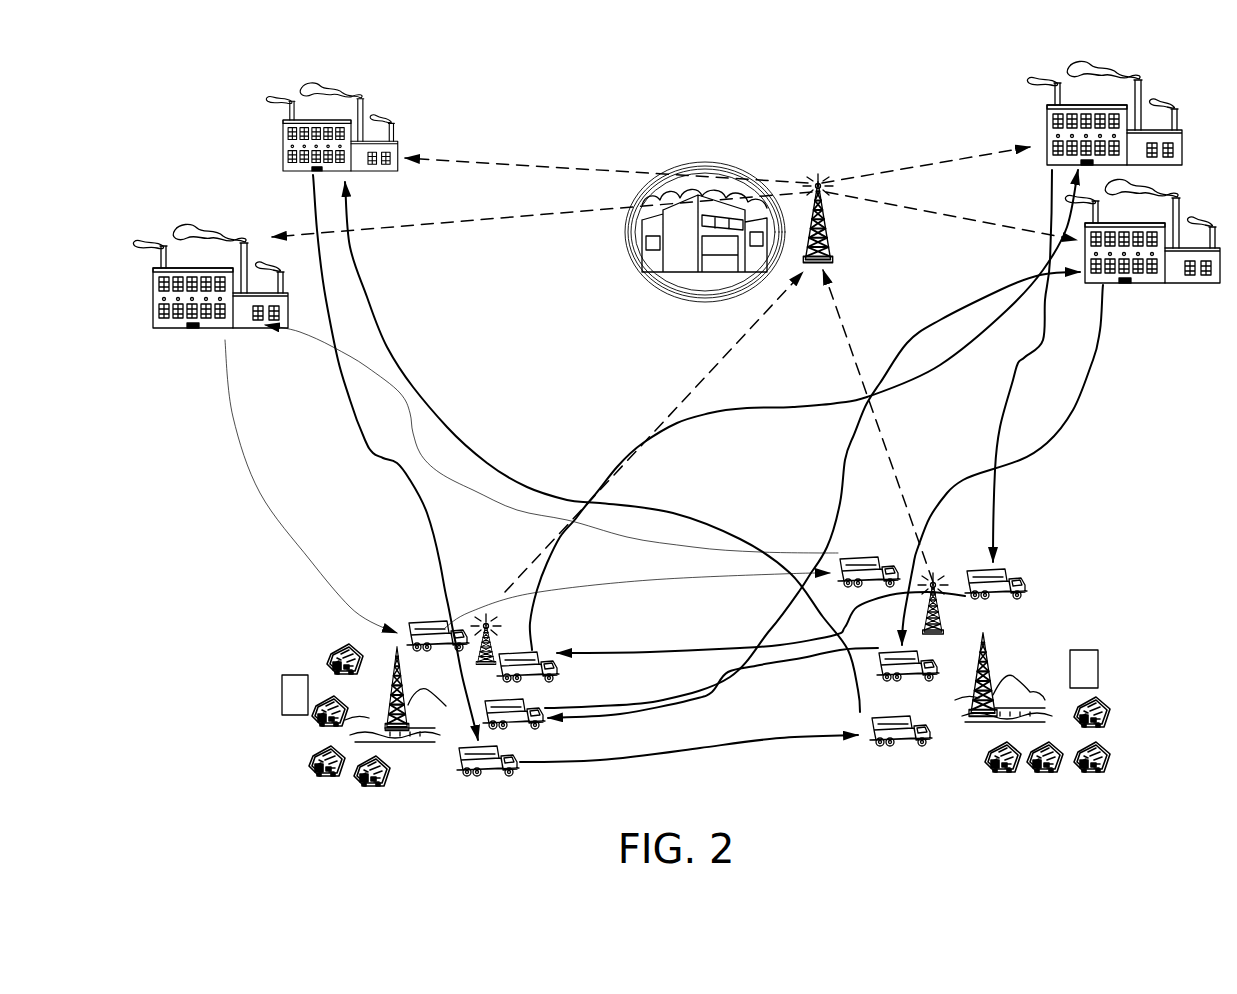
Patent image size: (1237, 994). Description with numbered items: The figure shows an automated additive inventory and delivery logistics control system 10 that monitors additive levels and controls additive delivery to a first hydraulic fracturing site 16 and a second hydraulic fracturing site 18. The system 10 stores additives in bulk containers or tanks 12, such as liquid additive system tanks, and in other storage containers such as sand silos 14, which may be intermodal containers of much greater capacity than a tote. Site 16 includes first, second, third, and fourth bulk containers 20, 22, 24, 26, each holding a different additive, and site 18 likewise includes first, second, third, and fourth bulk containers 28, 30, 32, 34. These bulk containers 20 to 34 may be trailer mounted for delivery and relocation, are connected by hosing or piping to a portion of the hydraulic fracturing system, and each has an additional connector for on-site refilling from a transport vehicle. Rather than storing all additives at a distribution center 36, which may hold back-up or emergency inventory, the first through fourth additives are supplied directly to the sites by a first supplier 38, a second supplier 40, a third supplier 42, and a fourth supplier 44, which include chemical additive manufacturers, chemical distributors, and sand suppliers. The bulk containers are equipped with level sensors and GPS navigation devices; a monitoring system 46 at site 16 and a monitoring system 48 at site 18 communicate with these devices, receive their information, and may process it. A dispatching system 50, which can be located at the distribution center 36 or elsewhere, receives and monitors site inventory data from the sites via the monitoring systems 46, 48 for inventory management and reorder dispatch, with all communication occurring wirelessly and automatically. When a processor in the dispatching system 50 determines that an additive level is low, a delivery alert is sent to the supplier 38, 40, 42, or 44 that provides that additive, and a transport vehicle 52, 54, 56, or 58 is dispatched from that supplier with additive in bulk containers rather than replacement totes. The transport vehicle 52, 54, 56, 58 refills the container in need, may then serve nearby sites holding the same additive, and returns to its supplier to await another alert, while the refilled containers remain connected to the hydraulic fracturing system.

The automated additive inventory and delivery logistics control system 10 is at (540, 100).
The bulk containers or tanks 12 is at (696, 766).
The sand silos 14 is at (290, 698).
The first hydraulic fracturing site 16 is at (440, 738).
The second hydraulic fracturing site 18 is at (995, 718).
The first bulk container 20 is at (426, 618).
The second bulk container 22 is at (480, 777).
The third bulk container 24 is at (534, 648).
The fourth bulk container 26 is at (544, 703).
The first bulk container 28 is at (874, 554).
The second bulk container 30 is at (890, 752).
The third bulk container 32 is at (1020, 576).
The fourth bulk container 34 is at (935, 658).
The distribution center 36 is at (660, 275).
The first supplier 38 is at (198, 325).
The second supplier 40 is at (283, 142).
The third supplier 42 is at (1047, 126).
The fourth supplier 44 is at (1150, 284).
The monitoring system 46 is at (493, 648).
The monitoring system 48 is at (942, 606).
The dispatching system 50 is at (834, 248).
The transport vehicle 52 is at (392, 630).
The transport vehicle 54 is at (530, 768).
The transport vehicle 56 is at (548, 676).
The transport vehicle 58 is at (542, 728).